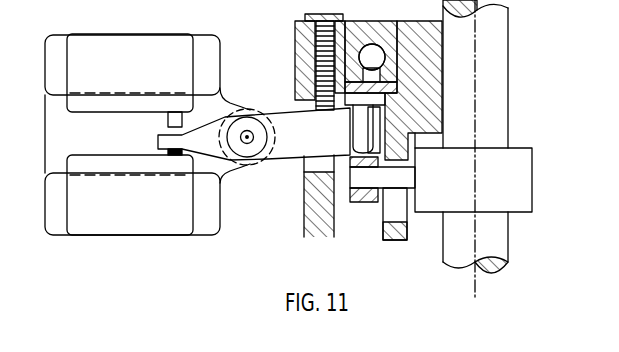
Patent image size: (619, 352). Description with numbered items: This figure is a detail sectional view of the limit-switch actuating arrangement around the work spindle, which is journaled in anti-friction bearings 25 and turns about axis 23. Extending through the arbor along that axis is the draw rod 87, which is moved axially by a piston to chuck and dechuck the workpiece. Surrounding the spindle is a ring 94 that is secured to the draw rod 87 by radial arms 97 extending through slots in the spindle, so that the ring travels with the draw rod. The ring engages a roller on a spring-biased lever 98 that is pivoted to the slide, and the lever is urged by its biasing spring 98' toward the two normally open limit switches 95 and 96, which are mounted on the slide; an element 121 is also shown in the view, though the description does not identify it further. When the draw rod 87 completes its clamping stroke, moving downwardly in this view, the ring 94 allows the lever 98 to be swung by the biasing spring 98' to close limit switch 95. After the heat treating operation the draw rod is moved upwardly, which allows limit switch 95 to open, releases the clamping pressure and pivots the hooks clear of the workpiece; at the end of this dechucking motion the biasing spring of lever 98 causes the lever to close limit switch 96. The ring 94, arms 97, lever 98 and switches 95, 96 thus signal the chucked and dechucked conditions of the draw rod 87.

The adjusting screw 121 is at (271, 55).
The biasing spring 98' is at (347, 90).
The anti-friction bearings 25 is at (372, 55).
The axis of work spindle 23 is at (478, 70).
The draw rod 87 is at (497, 125).
The limit switch 96 is at (135, 82).
The limit switch 95 is at (133, 214).
The spring-biased lever 98 is at (269, 132).
The ring 94 is at (362, 202).
The radial arms 97 is at (398, 183).